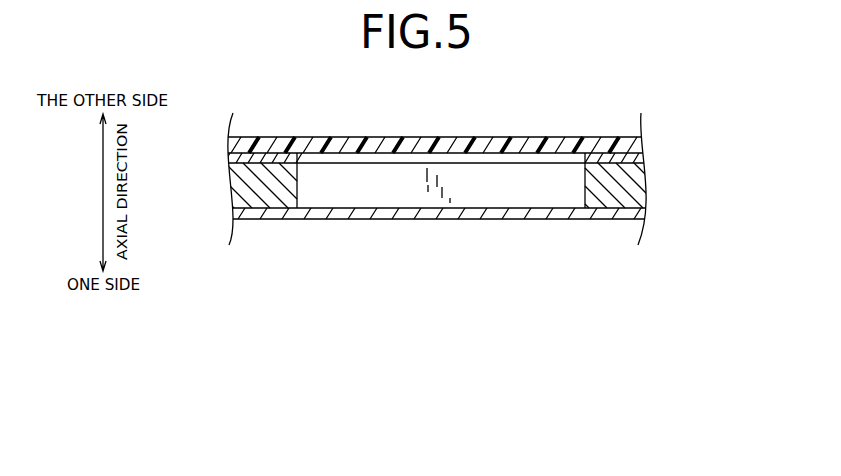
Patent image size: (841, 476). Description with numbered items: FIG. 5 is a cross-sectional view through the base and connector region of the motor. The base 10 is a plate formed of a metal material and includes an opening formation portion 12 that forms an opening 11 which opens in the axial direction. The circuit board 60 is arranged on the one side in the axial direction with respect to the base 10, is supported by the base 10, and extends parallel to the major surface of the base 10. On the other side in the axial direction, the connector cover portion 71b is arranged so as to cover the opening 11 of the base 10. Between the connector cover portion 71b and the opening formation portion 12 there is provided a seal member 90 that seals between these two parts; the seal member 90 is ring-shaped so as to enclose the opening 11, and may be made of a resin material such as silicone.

The connector cover portion 71b is at (483, 142).
The opening 11 is at (557, 175).
The seal member 90 is at (230, 158).
The base 10 is at (224, 195).
The opening formation portion 12 is at (298, 186).
The circuit board 60 is at (400, 230).